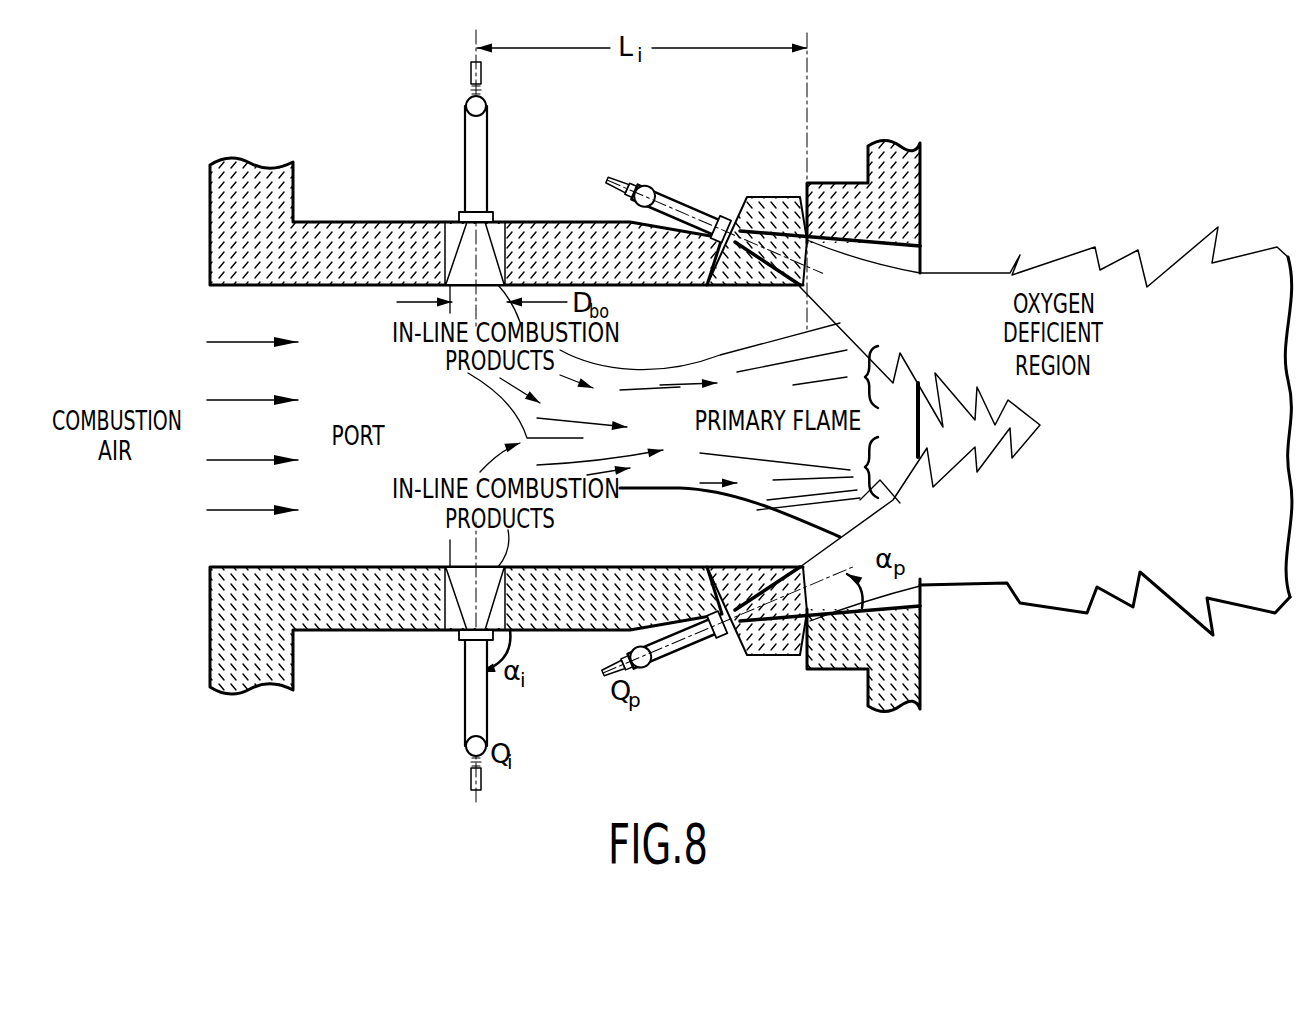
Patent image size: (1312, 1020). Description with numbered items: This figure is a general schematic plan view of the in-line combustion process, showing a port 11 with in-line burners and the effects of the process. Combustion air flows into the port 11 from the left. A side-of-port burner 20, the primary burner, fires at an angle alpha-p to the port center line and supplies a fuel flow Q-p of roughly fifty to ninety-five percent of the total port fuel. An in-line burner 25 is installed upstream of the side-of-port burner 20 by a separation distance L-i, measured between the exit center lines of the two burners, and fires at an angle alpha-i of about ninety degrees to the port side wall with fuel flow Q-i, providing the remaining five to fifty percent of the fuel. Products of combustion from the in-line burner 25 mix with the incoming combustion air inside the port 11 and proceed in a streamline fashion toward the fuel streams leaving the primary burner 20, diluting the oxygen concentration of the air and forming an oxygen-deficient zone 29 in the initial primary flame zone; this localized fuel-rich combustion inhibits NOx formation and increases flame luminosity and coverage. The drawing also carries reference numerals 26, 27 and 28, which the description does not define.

The port 11 is at (363, 556).
The side-of-port burner 20 is at (688, 197).
The in-line burner 25 is at (490, 130).
The in-line combustion products stream 26 is at (740, 357).
The burner port outlet 27 is at (923, 240).
The flame envelope boundary 28 is at (1063, 604).
The oxygen-deficient zone 29 is at (1067, 584).